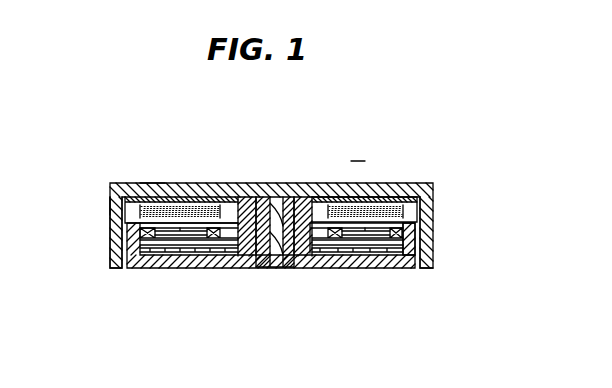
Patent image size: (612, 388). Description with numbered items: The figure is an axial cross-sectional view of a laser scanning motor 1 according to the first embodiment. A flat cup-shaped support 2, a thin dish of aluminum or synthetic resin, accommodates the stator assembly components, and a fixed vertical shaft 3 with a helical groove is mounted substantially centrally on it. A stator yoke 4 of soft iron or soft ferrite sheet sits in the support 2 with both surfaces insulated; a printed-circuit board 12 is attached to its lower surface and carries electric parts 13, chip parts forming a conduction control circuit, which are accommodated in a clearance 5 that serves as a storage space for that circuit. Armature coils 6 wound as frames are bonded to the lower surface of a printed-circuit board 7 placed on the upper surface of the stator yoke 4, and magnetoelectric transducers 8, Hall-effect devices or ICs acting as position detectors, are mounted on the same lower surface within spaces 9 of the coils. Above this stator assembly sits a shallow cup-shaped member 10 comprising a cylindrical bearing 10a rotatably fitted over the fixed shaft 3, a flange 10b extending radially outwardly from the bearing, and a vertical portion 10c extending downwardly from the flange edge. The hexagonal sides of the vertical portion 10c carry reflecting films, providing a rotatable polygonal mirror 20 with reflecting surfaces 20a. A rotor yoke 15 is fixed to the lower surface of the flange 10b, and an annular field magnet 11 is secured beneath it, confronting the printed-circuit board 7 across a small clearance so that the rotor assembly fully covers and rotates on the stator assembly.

The laser scanning motor 1 is at (331, 180).
The flat cup-shaped support 2 is at (147, 269).
The fixed vertical shaft 3 is at (275, 269).
The stator yoke 4 is at (393, 264).
The clearance 5 is at (183, 229).
The armature coils 6 is at (243, 264).
The printed-circuit board 7 is at (323, 229).
The magnetoelectric transducers 8 is at (167, 268).
The spaces 9 is at (163, 226).
The member 10 is at (416, 183).
The cylindrical bearing 10a is at (249, 205).
The flange 10b is at (150, 183).
The vertical portion 10c is at (427, 203).
The annular field magnet 11 is at (383, 202).
The printed-circuit board 12 is at (208, 268).
The electric parts 13 is at (375, 254).
The rotor yoke 15 is at (190, 205).
The rotatable polygonal mirror 20 is at (109, 233).
The reflecting surfaces 20a is at (112, 205).